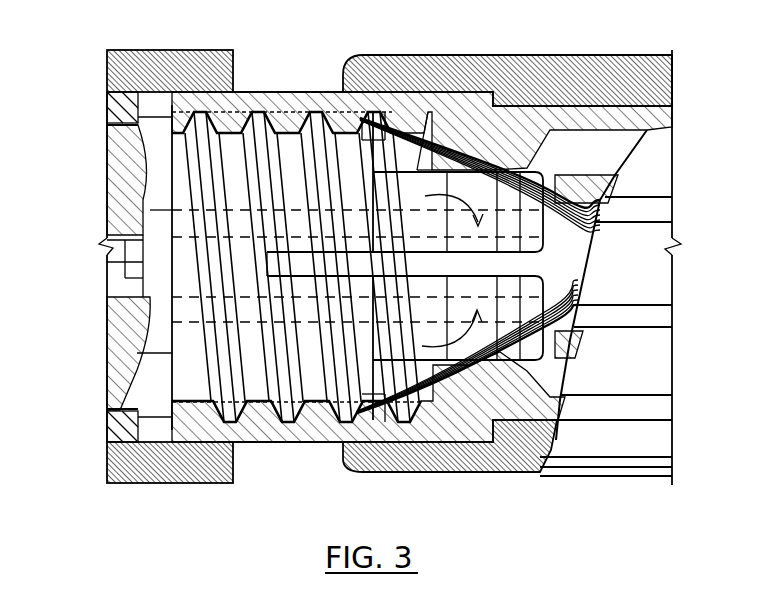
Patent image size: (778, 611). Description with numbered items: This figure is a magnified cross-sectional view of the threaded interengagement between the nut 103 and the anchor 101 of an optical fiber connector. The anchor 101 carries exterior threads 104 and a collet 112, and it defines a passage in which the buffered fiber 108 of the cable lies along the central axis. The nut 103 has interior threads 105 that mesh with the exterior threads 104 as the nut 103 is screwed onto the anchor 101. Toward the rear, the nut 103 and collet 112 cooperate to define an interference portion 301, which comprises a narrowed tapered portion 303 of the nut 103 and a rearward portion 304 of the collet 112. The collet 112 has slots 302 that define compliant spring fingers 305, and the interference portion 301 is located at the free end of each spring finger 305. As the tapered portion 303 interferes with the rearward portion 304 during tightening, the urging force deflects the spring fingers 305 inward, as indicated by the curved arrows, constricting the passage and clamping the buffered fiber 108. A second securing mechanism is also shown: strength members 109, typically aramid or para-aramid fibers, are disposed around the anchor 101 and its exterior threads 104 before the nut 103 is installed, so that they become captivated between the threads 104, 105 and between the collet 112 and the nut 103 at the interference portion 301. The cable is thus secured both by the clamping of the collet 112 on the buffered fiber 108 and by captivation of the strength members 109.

The anchor 101 is at (227, 150).
The nut 103 is at (196, 432).
The exterior threads 104 is at (343, 402).
The interior threads 105 is at (252, 405).
The buffered fiber 108 is at (568, 267).
The strength members 109 is at (370, 412).
The collet 112 is at (402, 178).
The interference portion 301 is at (456, 385).
The slots 302 is at (280, 265).
The tapered portion 303 is at (445, 165).
The rearward portion 304 is at (528, 192).
The spring fingers 305 is at (393, 205).